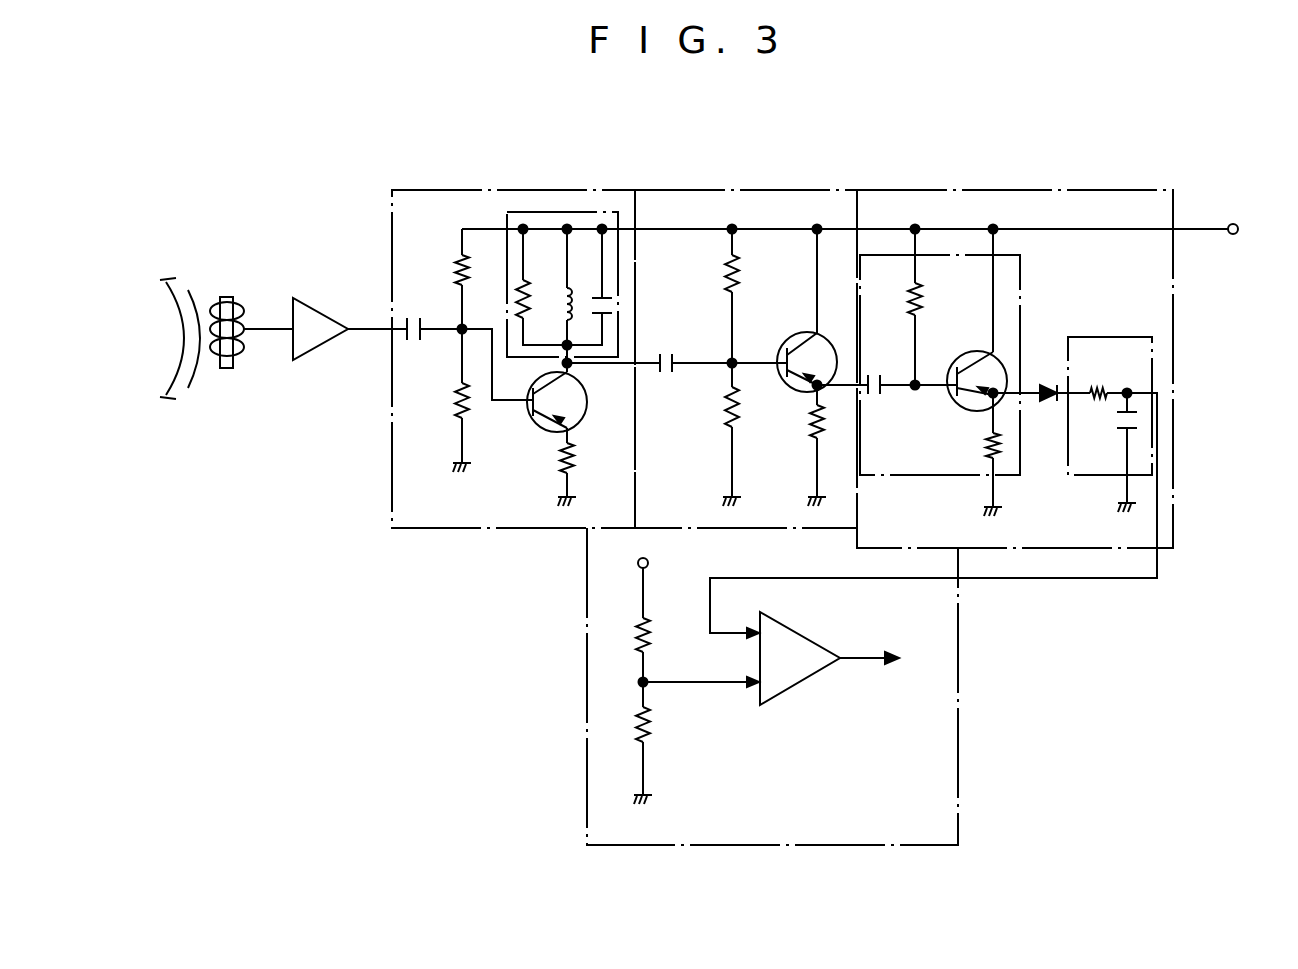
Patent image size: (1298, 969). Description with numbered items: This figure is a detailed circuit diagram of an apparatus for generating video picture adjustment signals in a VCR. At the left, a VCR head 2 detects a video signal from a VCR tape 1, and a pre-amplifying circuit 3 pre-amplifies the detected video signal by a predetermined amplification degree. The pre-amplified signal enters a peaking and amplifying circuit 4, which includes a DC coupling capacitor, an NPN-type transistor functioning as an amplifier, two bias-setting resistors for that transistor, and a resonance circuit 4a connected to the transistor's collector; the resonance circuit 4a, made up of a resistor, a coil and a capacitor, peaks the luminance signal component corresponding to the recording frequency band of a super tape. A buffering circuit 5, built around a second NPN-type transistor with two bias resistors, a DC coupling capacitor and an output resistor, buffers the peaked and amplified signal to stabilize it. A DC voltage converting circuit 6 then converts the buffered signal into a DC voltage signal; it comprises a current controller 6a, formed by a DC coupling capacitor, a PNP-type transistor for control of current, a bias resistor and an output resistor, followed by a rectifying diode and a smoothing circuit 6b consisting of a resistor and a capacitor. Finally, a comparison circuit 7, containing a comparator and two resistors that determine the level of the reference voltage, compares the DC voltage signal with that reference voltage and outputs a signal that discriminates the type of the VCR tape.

The VCR tape 1 is at (190, 316).
The VCR head 2 is at (228, 371).
The pre-amplifying circuit 3 is at (312, 318).
The peaking and amplifying circuit 4 is at (535, 200).
The resonance circuit 4a is at (588, 210).
The buffering circuit 5 is at (718, 200).
The DC voltage converting circuit 6 is at (950, 200).
The current controller 6a is at (1008, 284).
The smoothing circuit 6b is at (1130, 348).
The comparison circuit 7 is at (597, 678).